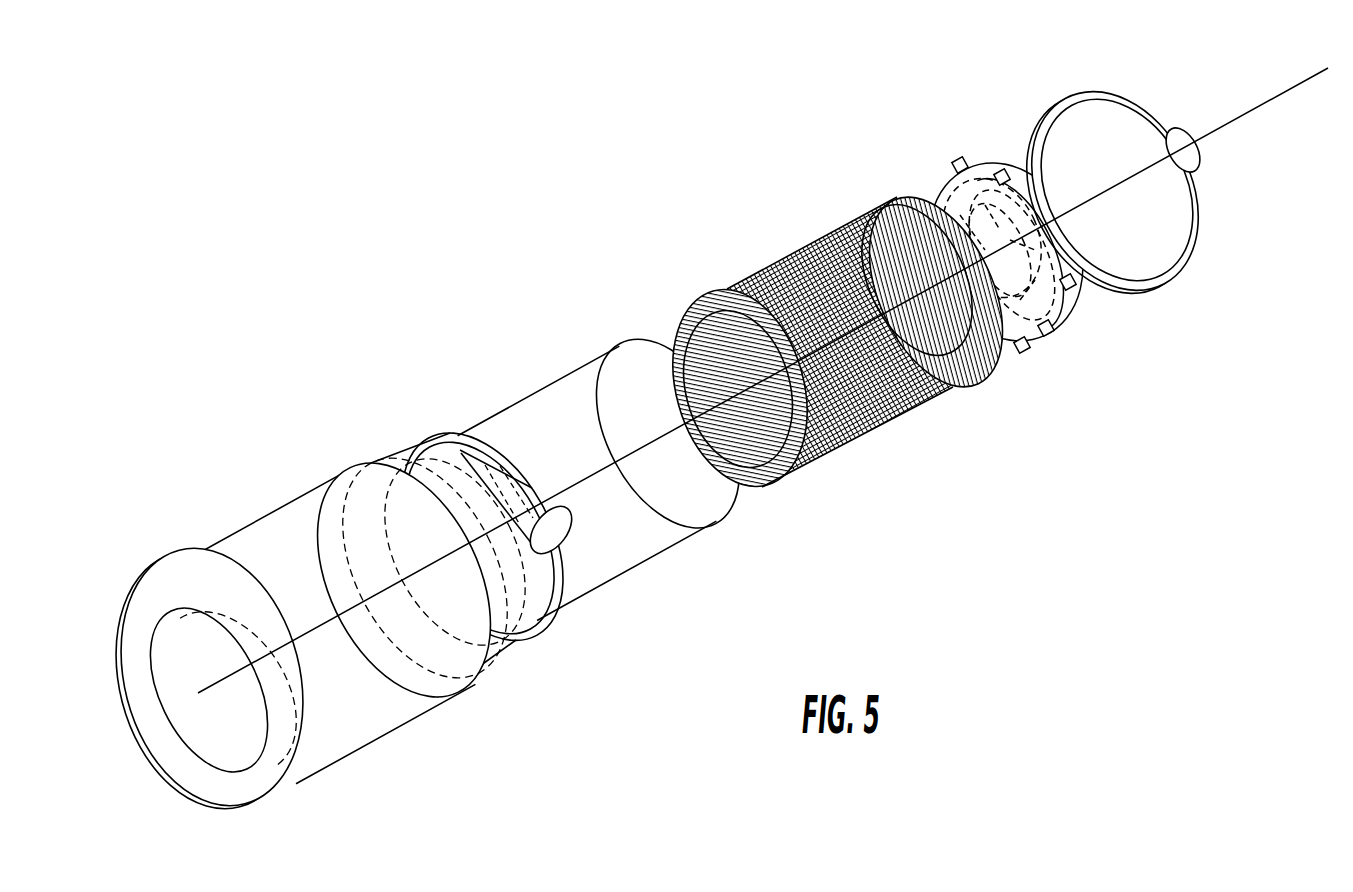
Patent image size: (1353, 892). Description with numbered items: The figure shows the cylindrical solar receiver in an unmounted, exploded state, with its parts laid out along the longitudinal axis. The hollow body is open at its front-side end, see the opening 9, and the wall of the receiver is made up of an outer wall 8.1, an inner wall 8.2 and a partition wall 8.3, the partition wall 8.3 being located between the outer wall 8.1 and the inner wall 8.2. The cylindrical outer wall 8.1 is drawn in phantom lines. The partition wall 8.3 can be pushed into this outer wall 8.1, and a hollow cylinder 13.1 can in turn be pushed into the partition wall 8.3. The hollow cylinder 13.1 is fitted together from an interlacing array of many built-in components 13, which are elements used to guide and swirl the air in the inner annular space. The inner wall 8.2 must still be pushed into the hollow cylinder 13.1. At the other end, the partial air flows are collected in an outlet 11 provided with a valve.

The opening 9 is at (188, 669).
The outer wall 8.1 is at (397, 728).
The inner wall 8.2 is at (780, 493).
The partition wall 8.3 is at (645, 566).
The built-in components 13 is at (907, 413).
The hollow cylinder 13.1 is at (973, 387).
The outlet 11 is at (1197, 139).